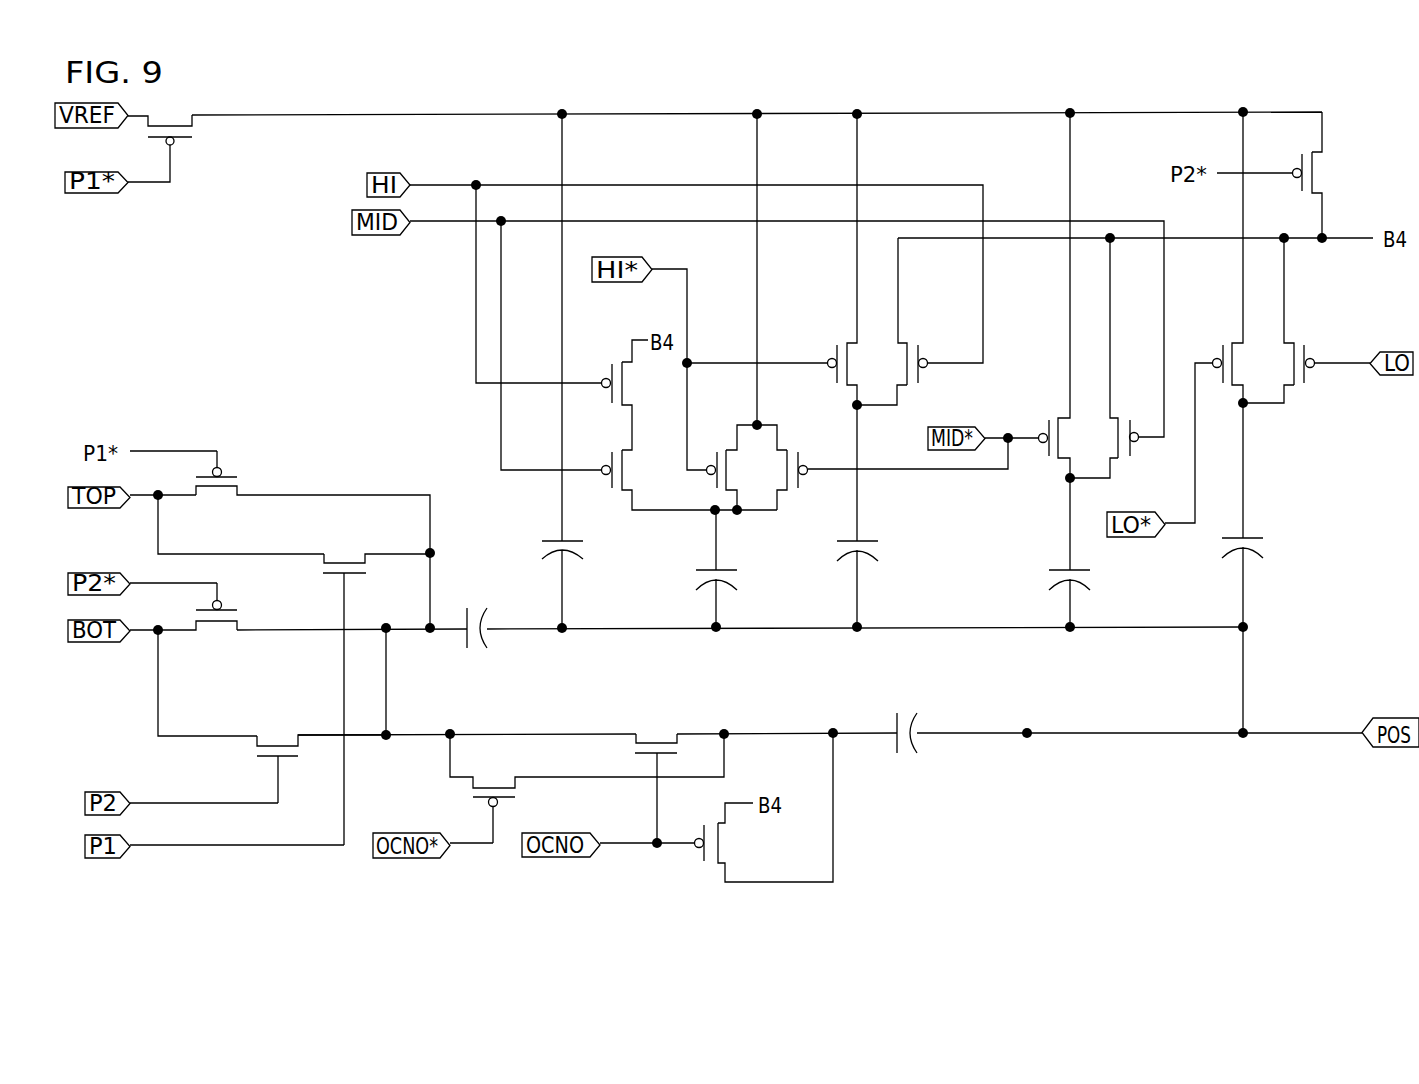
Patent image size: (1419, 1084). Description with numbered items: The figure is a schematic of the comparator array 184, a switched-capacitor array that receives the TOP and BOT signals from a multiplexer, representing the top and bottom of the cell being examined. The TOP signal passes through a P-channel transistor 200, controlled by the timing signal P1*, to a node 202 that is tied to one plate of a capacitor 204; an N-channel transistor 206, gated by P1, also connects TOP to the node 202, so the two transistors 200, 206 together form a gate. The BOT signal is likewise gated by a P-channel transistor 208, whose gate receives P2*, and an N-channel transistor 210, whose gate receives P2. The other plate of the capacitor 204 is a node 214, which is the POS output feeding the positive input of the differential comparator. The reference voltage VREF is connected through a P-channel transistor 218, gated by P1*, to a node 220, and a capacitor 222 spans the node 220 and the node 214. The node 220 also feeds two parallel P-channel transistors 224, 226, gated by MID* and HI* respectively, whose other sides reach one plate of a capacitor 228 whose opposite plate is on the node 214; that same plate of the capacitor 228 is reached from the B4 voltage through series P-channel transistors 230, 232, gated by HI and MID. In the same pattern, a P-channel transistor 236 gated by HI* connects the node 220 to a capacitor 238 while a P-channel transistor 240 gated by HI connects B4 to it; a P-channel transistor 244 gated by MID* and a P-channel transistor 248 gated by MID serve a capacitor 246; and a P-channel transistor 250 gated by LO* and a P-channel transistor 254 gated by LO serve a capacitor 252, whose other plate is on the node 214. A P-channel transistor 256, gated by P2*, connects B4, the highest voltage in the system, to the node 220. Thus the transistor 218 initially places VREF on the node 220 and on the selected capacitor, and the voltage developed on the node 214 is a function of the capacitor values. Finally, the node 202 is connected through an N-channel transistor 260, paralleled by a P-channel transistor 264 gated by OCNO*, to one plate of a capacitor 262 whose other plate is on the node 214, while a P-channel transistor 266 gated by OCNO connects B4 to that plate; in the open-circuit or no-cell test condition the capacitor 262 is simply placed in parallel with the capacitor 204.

The comparator array 184 is at (1310, 89).
The P-channel transistor 200 is at (222, 488).
The node 202 is at (430, 635).
The capacitor 204 is at (467, 607).
The N-channel transistor 206 is at (352, 562).
The P-channel transistor 208 is at (222, 625).
The N-channel transistor 210 is at (268, 737).
The node 214 is at (597, 630).
The P-channel transistor 218 is at (185, 111).
The node 220 is at (657, 112).
The capacitor 222 is at (550, 540).
The P-channel transistor 224 is at (788, 495).
The P-channel transistor 226 is at (729, 448).
The capacitor 228 is at (705, 568).
The P-channel transistor 230 is at (625, 360).
The P-channel transistor 232 is at (627, 450).
The P-channel transistor 236 is at (847, 342).
The capacitor 238 is at (870, 538).
The P-channel transistor 240 is at (907, 385).
The P-channel transistor 244 is at (1062, 417).
The capacitor 246 is at (1057, 566).
The P-channel transistor 248 is at (1118, 462).
The P-channel transistor 250 is at (1238, 341).
The capacitor 252 is at (1257, 540).
The P-channel transistor 254 is at (1293, 386).
The P-channel transistor 256 is at (1313, 165).
The N-channel transistor 260 is at (665, 742).
The capacitor 262 is at (892, 720).
The P-channel transistor 264 is at (517, 786).
The P-channel transistor 266 is at (713, 866).